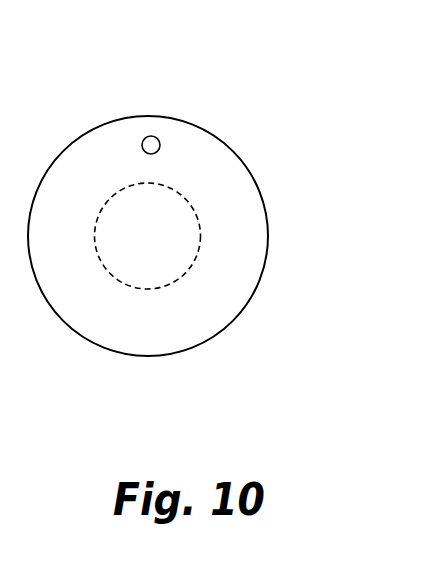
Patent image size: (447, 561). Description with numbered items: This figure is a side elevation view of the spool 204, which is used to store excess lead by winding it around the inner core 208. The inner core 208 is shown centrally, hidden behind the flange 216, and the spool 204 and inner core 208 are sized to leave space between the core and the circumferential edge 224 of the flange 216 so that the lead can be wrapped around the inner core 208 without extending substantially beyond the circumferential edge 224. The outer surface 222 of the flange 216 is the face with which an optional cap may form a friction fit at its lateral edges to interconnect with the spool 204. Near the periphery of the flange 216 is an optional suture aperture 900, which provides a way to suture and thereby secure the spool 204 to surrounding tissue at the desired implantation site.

The spool 204 is at (130, 106).
The suture aperture 900 is at (152, 136).
The outer surface of the flange 222 is at (195, 165).
The flange 216 is at (238, 197).
The inner core 208 is at (201, 241).
The circumferential edge of the flange 224 is at (238, 315).